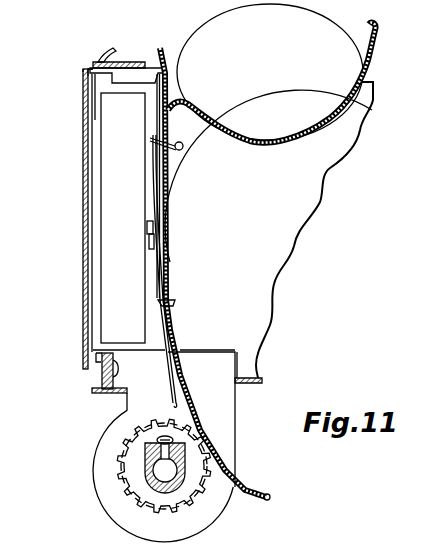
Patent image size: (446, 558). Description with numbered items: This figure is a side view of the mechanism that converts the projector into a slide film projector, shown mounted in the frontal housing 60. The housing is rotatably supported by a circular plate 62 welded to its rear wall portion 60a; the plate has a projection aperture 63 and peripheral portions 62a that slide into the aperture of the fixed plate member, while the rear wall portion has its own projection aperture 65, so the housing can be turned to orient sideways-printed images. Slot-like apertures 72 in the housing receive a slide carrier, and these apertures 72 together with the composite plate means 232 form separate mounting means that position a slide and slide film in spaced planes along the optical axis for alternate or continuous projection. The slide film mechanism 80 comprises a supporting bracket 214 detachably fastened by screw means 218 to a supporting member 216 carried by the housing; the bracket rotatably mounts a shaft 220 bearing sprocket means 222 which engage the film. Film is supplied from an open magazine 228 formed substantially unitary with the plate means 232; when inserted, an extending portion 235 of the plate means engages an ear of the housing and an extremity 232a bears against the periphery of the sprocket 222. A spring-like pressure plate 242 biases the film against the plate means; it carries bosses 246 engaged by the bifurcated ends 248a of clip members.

The frontal housing 60 is at (257, 247).
The rear wall portion 60a is at (90, 74).
The circular plate 62 is at (86, 100).
The peripheral portions 62a is at (84, 86).
The projection aperture 63 is at (89, 117).
The projection aperture 65 is at (92, 124).
The slot-like apertures 72 is at (103, 287).
The slide film mechanism 80 is at (252, 405).
The supporting bracket 214 is at (221, 390).
The supporting member 216 is at (90, 374).
The screw means 218 is at (118, 368).
The shaft 220 is at (157, 487).
The sprocket means 222 is at (193, 512).
The open magazine 228 is at (280, 74).
The composite plate means 232 is at (180, 327).
The extremity of the plate means 232a is at (216, 461).
The extending portion 235 is at (108, 54).
The pressure plate 242 is at (153, 200).
The bosses 246 is at (147, 229).
The bifurcated ends 248a is at (150, 243).